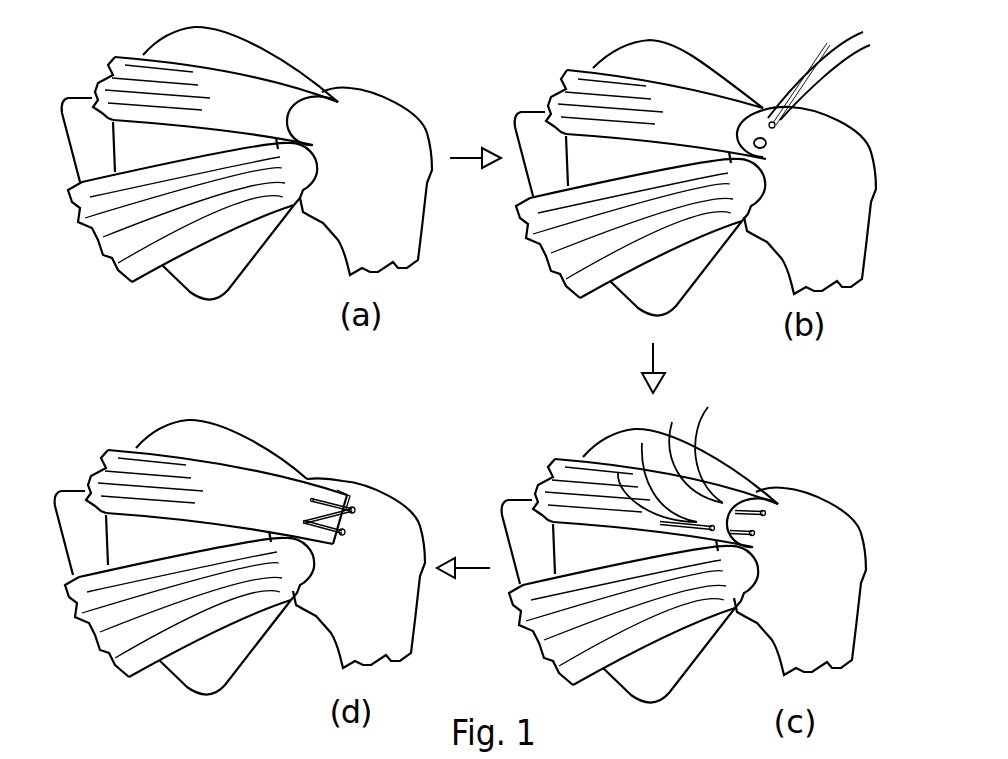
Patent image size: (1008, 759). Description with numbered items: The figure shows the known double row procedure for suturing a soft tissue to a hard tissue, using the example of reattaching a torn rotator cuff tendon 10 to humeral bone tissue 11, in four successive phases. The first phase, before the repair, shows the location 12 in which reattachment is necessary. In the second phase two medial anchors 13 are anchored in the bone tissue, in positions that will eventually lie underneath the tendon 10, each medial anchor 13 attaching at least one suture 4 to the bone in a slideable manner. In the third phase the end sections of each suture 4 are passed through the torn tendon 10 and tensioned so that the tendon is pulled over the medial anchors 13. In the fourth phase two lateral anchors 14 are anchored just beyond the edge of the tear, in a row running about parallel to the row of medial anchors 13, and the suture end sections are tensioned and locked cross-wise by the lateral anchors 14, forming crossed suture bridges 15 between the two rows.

The suture 4 is at (788, 69).
The rotator cuff tendon 10 is at (283, 86).
The humeral bone tissue 11 is at (380, 212).
The location 12 is at (318, 120).
The medial anchor 13 is at (796, 133).
The lateral anchor 14 is at (372, 503).
The crossed suture bridge 15 is at (226, 482).